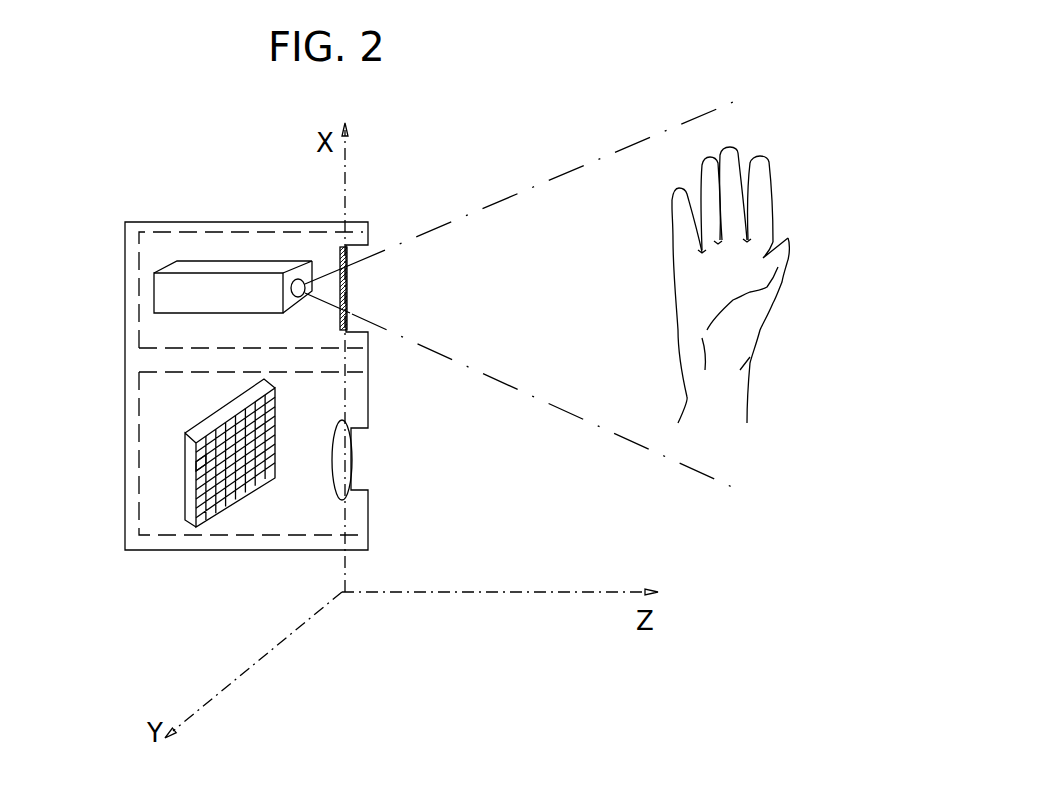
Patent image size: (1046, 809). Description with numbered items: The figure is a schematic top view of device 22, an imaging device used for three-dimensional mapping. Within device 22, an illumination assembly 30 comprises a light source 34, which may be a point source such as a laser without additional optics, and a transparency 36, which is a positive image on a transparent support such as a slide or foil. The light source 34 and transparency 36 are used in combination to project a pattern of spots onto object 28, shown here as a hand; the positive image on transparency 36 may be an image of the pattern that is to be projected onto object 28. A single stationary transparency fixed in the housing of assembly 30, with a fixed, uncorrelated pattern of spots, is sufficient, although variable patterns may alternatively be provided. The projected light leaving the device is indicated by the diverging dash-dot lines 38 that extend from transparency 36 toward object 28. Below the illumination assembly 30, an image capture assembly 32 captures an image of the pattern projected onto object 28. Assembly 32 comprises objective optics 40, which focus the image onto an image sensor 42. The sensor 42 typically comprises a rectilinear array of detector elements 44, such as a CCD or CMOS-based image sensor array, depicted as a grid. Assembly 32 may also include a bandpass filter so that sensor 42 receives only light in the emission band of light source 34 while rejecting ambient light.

The device 22 is at (197, 221).
The object 28 is at (782, 282).
The illumination assembly 30 is at (250, 230).
The image capture assembly 32 is at (188, 537).
The light source 34 is at (154, 292).
The transparency 36 is at (340, 250).
The emitted light beam 38 is at (645, 138).
The objective optics 40 is at (337, 437).
The image sensor 42 is at (218, 421).
The detector elements 44 is at (196, 458).